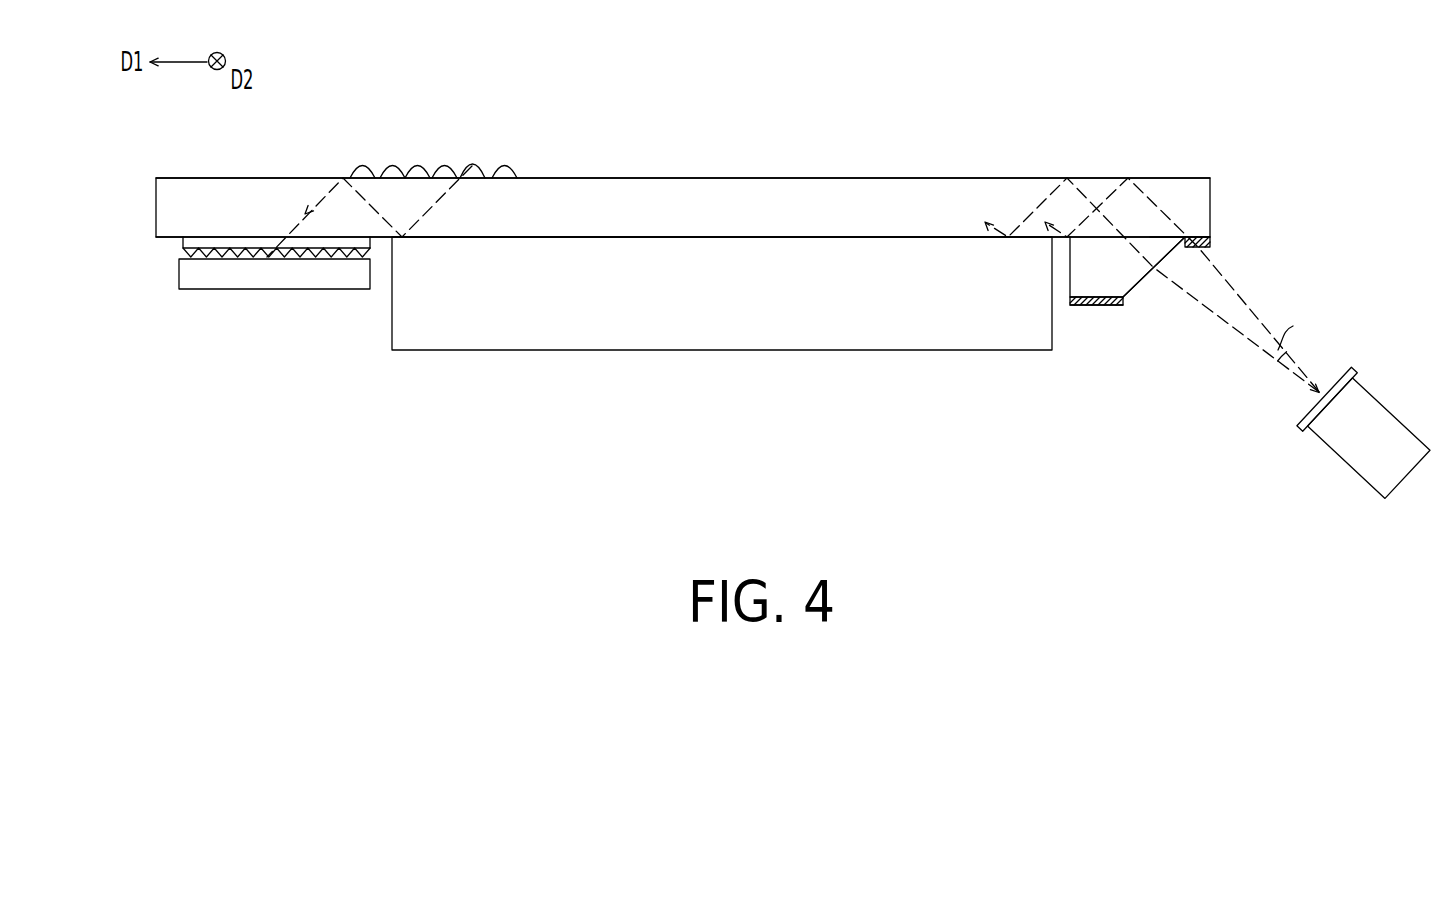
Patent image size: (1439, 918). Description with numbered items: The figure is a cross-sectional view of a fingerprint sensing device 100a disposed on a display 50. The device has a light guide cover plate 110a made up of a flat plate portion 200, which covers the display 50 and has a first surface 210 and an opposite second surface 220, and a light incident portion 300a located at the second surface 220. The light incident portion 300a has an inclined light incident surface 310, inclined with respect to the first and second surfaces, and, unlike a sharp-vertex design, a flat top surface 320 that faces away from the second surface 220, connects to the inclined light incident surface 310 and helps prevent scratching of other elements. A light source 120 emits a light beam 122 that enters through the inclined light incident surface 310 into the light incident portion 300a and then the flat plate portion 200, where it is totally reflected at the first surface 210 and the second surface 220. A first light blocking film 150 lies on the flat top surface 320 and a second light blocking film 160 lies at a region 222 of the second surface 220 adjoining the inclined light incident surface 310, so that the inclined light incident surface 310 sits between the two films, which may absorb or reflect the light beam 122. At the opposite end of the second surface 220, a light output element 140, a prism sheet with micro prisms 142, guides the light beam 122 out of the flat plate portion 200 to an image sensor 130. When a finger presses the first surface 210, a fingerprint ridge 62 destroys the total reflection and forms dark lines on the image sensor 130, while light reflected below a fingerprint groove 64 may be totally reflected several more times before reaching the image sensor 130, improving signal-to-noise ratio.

The fingerprint sensing device 100a is at (1214, 134).
The light guide cover plate 110a is at (1135, 121).
The flat plate portion 200 is at (1032, 190).
The first surface 210 is at (782, 175).
The second surface 220 is at (786, 240).
The region of the second surface 222 is at (1198, 236).
The second light blocking film 160 is at (1204, 248).
The light incident portion 300a is at (1108, 255).
The inclined light incident surface 310 is at (1145, 281).
The flat top surface 320 is at (1103, 305).
The first light blocking film 150 is at (1078, 305).
The light source 120 is at (1382, 420).
The light beam 122 is at (1247, 307).
The image sensor 130 is at (272, 280).
The light output element 140 is at (235, 289).
The micro prisms 142 is at (227, 258).
The display 50 is at (711, 350).
The fingerprint ridge 62 is at (427, 177).
The fingerprint groove 64 is at (473, 165).